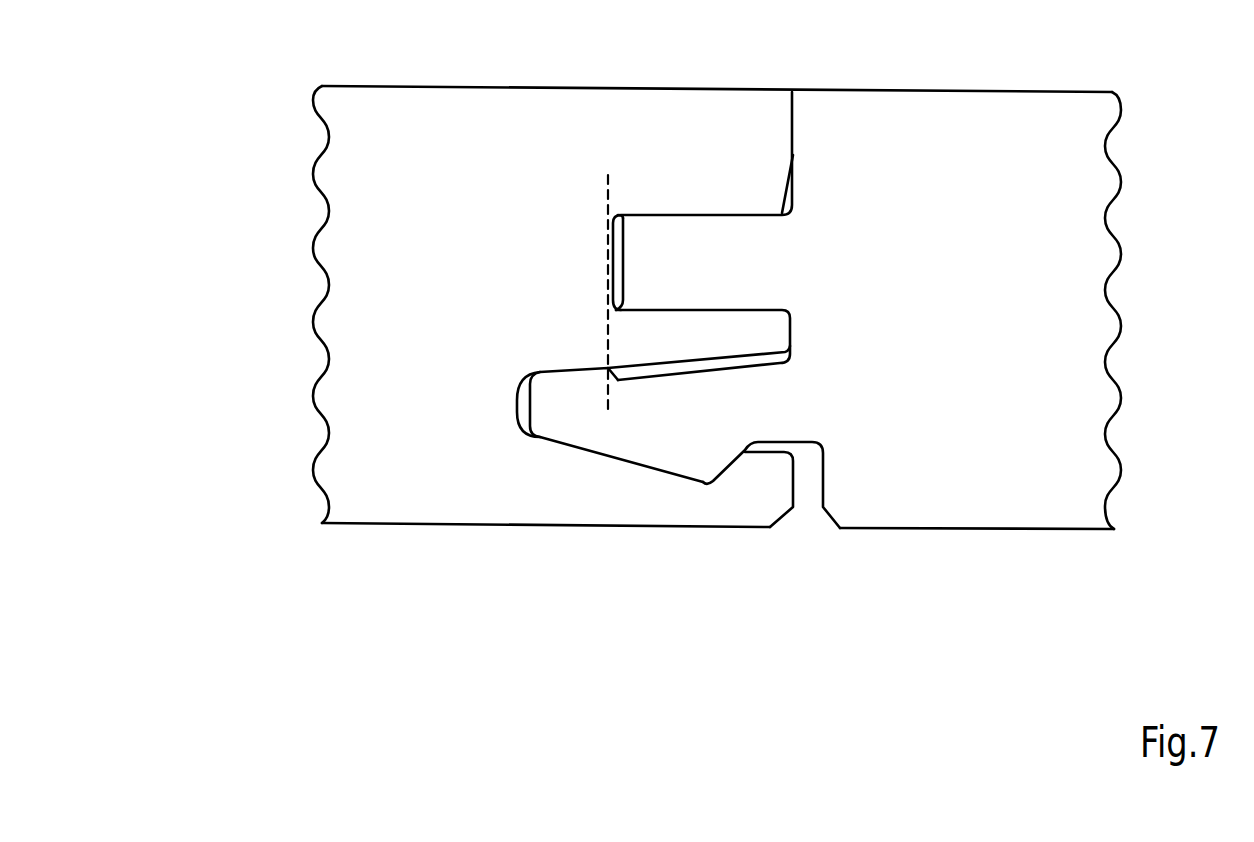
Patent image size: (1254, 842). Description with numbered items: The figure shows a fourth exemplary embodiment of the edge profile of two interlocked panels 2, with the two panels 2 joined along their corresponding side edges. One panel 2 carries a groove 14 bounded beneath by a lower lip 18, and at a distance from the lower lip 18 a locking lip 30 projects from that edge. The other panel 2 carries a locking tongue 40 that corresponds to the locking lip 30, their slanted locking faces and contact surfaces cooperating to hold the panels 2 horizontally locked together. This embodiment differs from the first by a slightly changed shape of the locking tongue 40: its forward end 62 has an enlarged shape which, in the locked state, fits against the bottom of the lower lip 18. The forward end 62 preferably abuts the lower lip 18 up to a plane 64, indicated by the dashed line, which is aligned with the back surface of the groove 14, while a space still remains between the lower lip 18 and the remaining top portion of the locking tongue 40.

The panel 2 is at (487, 113).
The groove 14 is at (618, 213).
The lower lip 18 is at (708, 328).
The locking lip 30 is at (588, 503).
The locking tongue 40 is at (687, 417).
The forward end 62 is at (567, 383).
The plane 64 is at (605, 336).